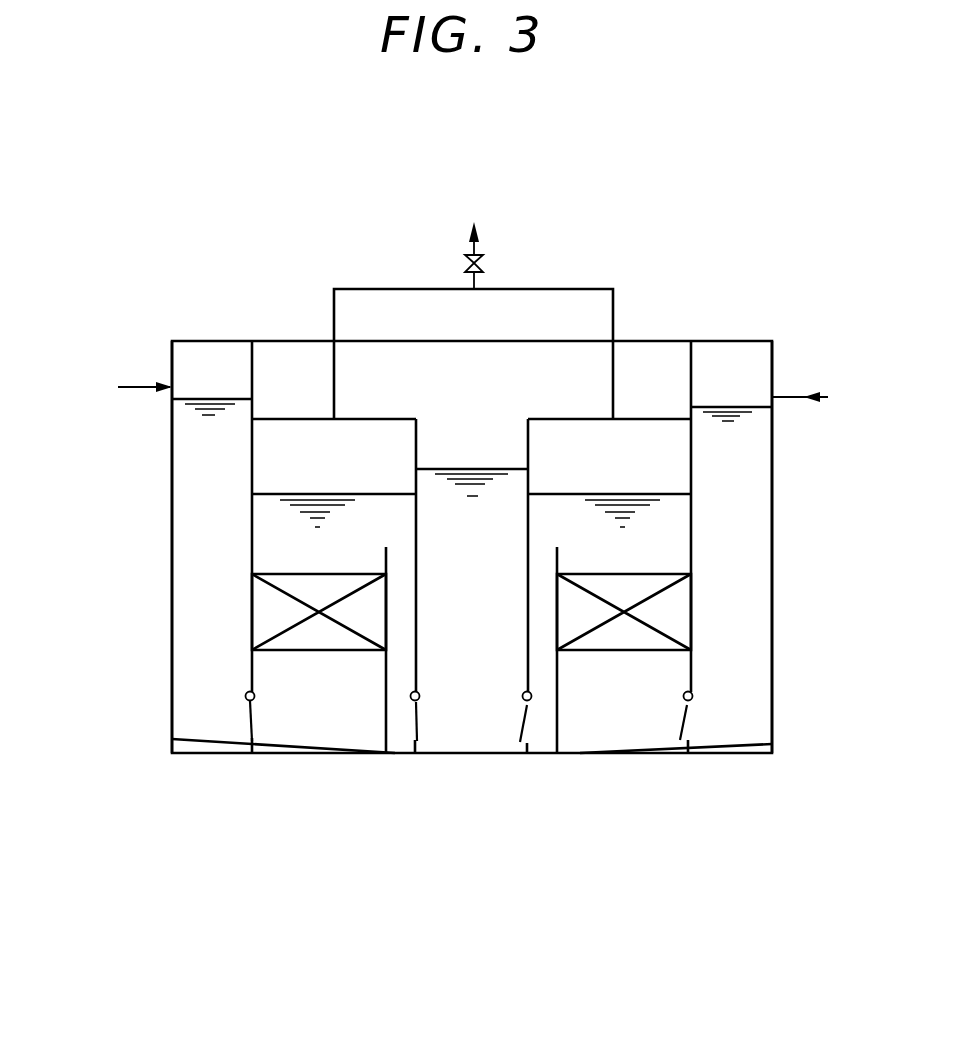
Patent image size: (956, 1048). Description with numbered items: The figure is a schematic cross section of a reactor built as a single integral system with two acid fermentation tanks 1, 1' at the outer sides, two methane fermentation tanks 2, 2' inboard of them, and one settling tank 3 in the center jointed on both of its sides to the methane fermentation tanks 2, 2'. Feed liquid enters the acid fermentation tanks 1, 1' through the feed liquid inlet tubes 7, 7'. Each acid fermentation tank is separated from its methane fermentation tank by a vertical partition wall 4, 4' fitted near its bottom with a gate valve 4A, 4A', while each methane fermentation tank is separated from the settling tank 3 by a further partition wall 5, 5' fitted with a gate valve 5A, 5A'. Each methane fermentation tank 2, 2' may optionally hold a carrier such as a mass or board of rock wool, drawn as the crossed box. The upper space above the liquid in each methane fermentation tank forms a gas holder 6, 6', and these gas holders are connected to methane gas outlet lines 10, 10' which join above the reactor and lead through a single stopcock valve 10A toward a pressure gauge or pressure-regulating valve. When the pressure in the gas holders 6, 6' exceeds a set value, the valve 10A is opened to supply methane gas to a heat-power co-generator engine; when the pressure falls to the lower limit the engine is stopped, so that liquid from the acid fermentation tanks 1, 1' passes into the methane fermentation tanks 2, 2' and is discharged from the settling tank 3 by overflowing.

The acid fermentation tank 1 is at (174, 547).
The acid fermentation tank 1' is at (770, 547).
The methane fermentation tank 2 is at (319, 692).
The methane fermentation tank 2' is at (624, 695).
The settling tank 3 is at (464, 723).
The partition wall 4 is at (174, 516).
The partition wall 4' is at (761, 516).
The gate valve 4A is at (226, 751).
The gate valve 4A' is at (720, 759).
The partition wall 5 is at (412, 661).
The partition wall 5' is at (522, 659).
The gate valve 5A is at (378, 769).
The gate valve 5A' is at (548, 766).
The gas holder 6 is at (327, 399).
The gas holder 6' is at (630, 402).
The feed liquid inlet tube 7 is at (131, 385).
The feed liquid inlet tube 7' is at (816, 395).
The methane gas outlet line 10 is at (404, 322).
The methane gas outlet line 10' is at (552, 320).
The stopcock valve 10A is at (483, 268).